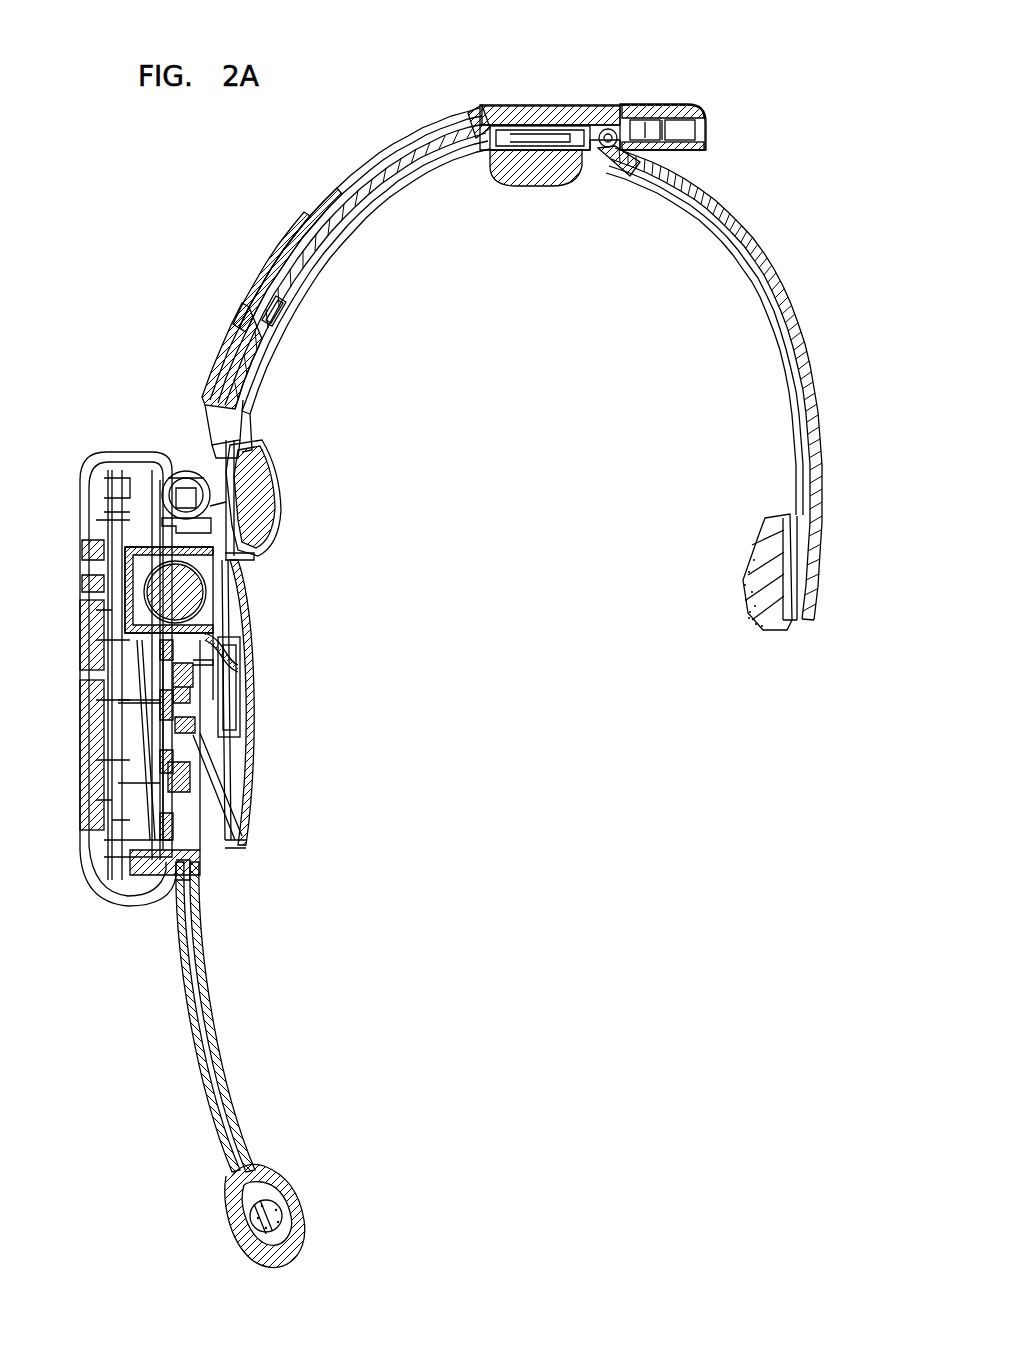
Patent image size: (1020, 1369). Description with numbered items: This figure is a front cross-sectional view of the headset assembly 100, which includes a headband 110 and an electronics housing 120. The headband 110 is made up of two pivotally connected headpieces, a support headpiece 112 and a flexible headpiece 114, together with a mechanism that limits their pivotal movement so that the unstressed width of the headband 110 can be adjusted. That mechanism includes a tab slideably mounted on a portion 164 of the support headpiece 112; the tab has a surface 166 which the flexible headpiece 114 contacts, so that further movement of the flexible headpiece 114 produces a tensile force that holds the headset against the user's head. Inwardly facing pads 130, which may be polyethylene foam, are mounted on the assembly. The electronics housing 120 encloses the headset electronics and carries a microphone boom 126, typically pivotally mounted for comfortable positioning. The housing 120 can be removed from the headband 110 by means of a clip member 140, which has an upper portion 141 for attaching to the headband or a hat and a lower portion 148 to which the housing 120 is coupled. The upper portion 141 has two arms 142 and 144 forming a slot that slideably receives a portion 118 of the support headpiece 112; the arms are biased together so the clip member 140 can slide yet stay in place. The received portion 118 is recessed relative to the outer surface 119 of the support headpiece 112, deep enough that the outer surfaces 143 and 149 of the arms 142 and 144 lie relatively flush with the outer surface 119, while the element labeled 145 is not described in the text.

The headset assembly 100 is at (556, 30).
The headband 110 is at (635, 91).
The support headpiece 112 is at (478, 126).
The flexible headpiece 114 is at (806, 345).
The portion of the support headpiece 118 is at (330, 245).
The outer surface of the support headpiece 119 is at (470, 134).
The electronics housing 120 is at (97, 918).
The microphone boom 126 is at (238, 1110).
The pads 130 is at (764, 602).
The clip member 140 is at (304, 181).
The upper portion of the clip member 141 is at (343, 230).
The arm of the clip member 142 is at (407, 195).
The outer surface of the clip member arm 143 is at (292, 318).
The arm of the clip member 144 is at (350, 176).
The outer cover 145 is at (318, 178).
The lower portion of the clip member 148 is at (198, 476).
The outer surface of the clip member arm 149 is at (452, 168).
The portion of the support headpiece 164 is at (694, 130).
The surface of the tab 166 is at (672, 163).